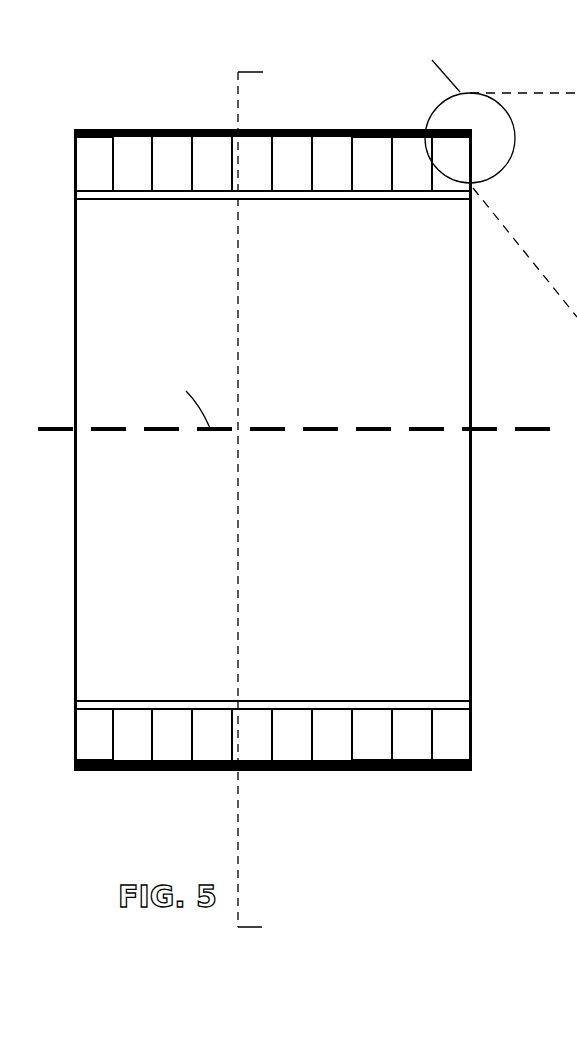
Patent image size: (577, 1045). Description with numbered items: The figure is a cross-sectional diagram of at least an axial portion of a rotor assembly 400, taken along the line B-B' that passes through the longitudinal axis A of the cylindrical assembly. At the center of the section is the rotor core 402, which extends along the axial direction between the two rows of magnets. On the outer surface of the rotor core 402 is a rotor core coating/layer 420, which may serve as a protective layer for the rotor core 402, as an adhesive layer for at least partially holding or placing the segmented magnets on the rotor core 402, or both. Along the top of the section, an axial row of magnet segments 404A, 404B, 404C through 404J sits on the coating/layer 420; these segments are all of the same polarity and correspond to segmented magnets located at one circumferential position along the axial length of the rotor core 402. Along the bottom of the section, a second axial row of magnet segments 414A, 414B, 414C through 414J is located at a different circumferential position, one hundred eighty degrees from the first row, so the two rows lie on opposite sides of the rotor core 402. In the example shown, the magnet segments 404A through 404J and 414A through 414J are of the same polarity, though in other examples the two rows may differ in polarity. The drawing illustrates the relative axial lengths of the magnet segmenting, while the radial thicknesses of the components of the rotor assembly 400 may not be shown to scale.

The rotor assembly 400 is at (307, 490).
The rotor core 402 is at (343, 484).
The magnet segment 404A is at (448, 190).
The magnet segment 404B is at (410, 183).
The magnet segment 404C is at (372, 187).
The magnet segment 404J is at (95, 178).
The magnet segment 414A is at (440, 747).
The magnet segment 414B is at (408, 733).
The magnet segment 414C is at (363, 743).
The magnet segment 414J is at (95, 743).
The rotor core coating/layer 420 is at (437, 700).